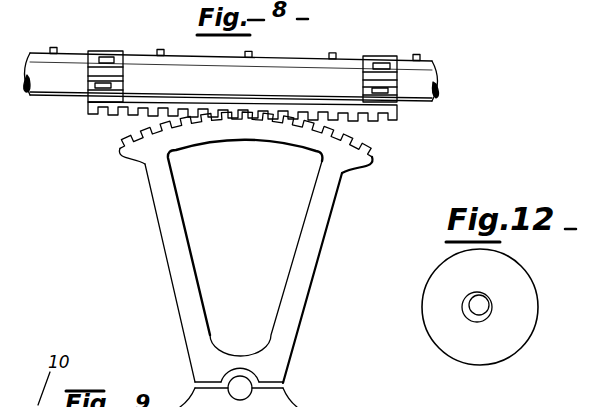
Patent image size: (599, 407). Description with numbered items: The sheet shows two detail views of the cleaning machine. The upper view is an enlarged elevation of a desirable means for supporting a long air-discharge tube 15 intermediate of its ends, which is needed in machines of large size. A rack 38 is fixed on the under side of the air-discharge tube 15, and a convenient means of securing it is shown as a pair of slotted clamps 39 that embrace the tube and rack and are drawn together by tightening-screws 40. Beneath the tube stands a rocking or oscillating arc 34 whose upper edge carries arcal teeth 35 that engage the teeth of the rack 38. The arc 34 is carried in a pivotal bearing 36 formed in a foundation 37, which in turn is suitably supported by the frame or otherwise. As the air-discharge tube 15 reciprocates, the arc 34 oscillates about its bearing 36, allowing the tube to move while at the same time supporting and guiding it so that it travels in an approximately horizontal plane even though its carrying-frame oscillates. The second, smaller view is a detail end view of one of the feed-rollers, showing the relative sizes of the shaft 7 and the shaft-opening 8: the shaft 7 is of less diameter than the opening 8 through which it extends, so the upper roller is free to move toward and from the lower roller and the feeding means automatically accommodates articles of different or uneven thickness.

In FIG. 8, the air-discharge tube 15 is at (60, 67).
In FIG. 8, the slotted clamps 39 is at (107, 53).
In FIG. 8, the tightening-screws 40 is at (112, 62).
In FIG. 8, the rack 38 is at (277, 110).
In FIG. 8, the arcal teeth 35 is at (345, 124).
In FIG. 8, the rocking or oscillating arc 34 is at (188, 238).
In FIG. 8, the pivotal bearing 36 is at (268, 383).
In FIG. 8, the foundation 37 is at (277, 402).
In FIG. 12, the shaft 7 is at (484, 298).
In FIG. 12, the opening 8 is at (480, 318).